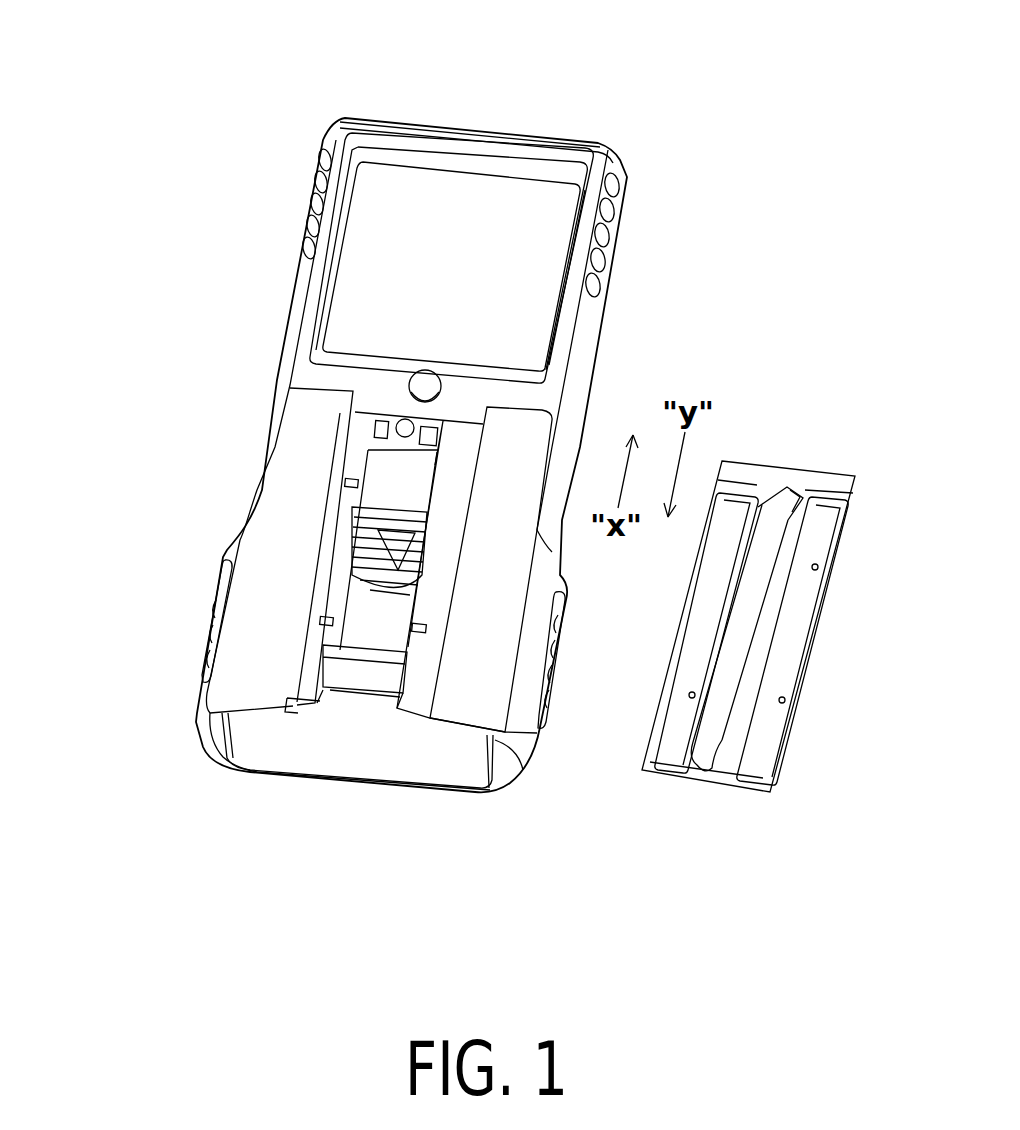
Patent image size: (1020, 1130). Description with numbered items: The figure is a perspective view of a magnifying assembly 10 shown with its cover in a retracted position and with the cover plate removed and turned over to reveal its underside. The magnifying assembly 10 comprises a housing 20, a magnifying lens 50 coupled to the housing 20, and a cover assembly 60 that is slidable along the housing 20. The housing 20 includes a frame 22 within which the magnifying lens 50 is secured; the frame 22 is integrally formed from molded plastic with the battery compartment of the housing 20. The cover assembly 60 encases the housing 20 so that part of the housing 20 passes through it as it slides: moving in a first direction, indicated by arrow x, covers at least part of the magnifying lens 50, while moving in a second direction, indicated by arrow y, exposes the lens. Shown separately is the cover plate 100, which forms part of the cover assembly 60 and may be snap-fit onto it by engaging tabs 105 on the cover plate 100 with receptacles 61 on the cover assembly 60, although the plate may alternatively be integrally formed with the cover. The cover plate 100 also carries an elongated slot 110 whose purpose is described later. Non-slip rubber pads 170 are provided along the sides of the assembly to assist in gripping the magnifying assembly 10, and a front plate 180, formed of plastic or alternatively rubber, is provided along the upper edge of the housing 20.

The magnifying assembly 10 is at (411, 413).
The housing 20 is at (505, 123).
The frame 22 is at (395, 140).
The magnifying lens 50 is at (432, 290).
The cover assembly 60 is at (508, 588).
The receptacles 61 is at (347, 484).
The cover plate 100 is at (763, 630).
The tabs 105 is at (815, 567).
The elongated slot 110 is at (790, 488).
The non-slip rubber pads 170 is at (305, 197).
The front plate 180 is at (380, 122).